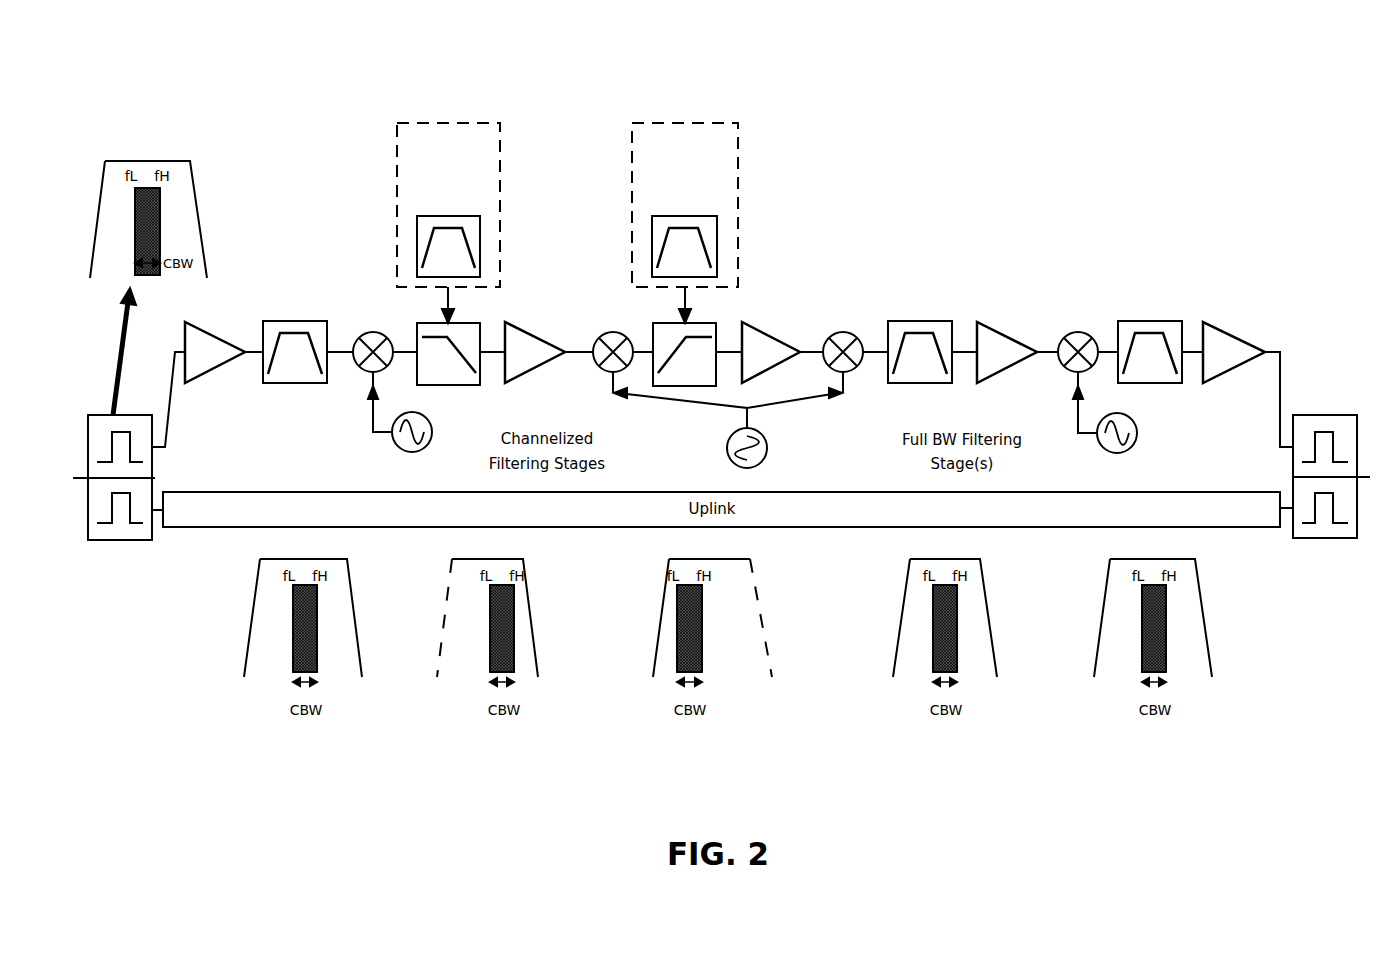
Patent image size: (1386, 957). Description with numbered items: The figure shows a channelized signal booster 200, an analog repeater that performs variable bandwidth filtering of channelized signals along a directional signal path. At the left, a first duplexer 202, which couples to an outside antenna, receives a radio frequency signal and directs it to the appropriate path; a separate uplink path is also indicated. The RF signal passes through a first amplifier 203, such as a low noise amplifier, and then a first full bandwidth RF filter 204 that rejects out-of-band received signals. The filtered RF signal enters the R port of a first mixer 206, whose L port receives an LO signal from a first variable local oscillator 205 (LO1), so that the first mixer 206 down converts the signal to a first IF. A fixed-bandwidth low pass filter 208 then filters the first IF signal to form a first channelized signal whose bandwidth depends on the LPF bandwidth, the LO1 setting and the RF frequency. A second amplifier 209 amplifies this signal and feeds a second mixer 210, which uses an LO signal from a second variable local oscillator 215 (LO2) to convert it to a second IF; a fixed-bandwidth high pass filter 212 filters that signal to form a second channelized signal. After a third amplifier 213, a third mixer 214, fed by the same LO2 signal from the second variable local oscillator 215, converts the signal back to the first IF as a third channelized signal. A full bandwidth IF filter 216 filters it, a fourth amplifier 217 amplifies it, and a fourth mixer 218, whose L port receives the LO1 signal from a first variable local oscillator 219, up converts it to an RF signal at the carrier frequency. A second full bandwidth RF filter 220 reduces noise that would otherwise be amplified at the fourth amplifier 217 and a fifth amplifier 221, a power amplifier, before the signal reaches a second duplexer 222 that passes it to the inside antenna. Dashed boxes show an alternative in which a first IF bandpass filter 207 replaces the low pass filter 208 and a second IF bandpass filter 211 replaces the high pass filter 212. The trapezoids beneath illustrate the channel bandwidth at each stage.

The channelized signal booster 200 is at (230, 78).
The first duplexer 202 is at (115, 503).
The first amplifier 203 is at (215, 366).
The first full bandwidth RF filter 204 is at (295, 301).
The first variable local oscillator 205 is at (405, 423).
The first mixer 206 is at (374, 329).
The first IF bandpass filter 207 is at (448, 223).
The fixed-bandwidth low pass filter 208 is at (448, 365).
The second amplifier 209 is at (535, 346).
The second mixer 210 is at (614, 329).
The second IF bandpass filter 211 is at (685, 223).
The fixed-bandwidth high pass filter 212 is at (684, 387).
The third amplifier 213 is at (771, 347).
The third mixer 214 is at (844, 329).
The second variable local oscillator 215 is at (728, 422).
The full bandwidth IF filter 216 is at (920, 301).
The fourth amplifier 217 is at (1007, 346).
The fourth mixer 218 is at (1079, 329).
The first variable local oscillator 219 is at (1110, 423).
The second full bandwidth RF filter 220 is at (1150, 301).
The fifth amplifier 221 is at (1234, 376).
The second duplexer 222 is at (1330, 503).